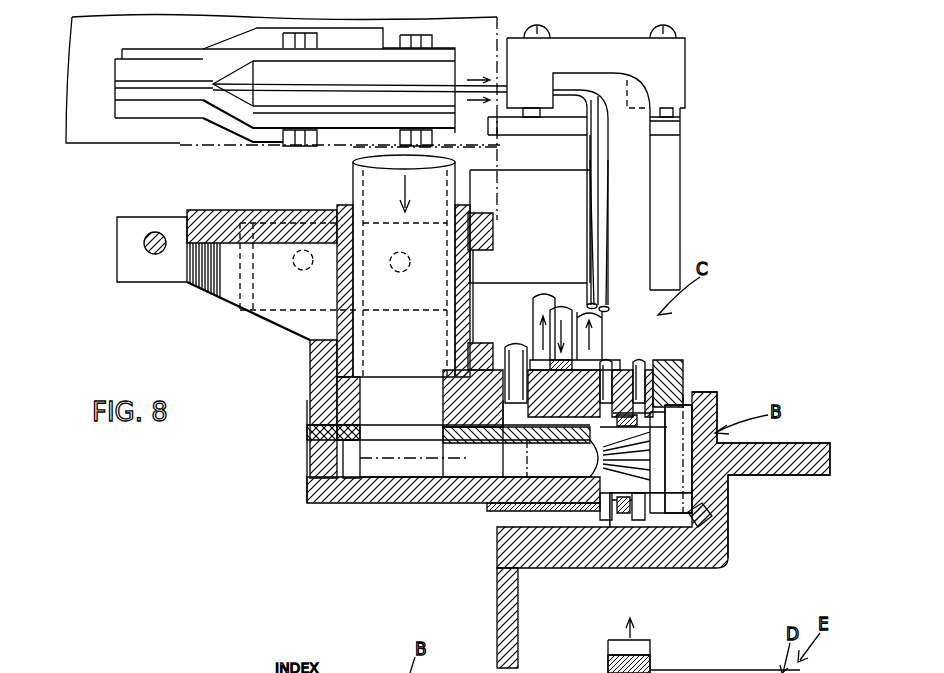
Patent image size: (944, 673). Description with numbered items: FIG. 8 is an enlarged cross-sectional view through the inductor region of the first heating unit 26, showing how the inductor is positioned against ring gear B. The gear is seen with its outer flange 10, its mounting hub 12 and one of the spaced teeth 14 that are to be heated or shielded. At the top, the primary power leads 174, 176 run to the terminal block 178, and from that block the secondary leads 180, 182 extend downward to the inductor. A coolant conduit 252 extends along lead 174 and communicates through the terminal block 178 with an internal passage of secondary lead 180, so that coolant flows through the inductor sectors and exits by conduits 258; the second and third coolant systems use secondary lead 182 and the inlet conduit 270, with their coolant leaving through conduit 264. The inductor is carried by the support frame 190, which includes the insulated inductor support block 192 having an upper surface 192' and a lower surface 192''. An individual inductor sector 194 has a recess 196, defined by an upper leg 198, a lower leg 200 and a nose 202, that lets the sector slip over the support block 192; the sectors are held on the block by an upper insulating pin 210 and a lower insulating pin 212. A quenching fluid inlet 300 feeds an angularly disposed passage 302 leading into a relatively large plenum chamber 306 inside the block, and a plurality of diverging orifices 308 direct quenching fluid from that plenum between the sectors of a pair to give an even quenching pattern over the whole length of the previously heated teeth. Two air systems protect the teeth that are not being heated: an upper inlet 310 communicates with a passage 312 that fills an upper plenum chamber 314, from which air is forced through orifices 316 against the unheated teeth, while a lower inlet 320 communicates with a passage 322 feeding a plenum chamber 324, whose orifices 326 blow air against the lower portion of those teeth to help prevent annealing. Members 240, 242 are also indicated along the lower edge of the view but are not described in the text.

The outer flange 10 is at (790, 443).
The mounting hub 12 is at (728, 518).
The spaced teeth 14 is at (700, 410).
The first heating unit 26 is at (87, 146).
The primary power lead 174 is at (185, 72).
The primary power lead 176 is at (178, 100).
The terminal block 178 is at (435, 68).
The secondary lead 180 is at (648, 190).
The secondary lead 182 is at (583, 243).
The support frame 190 is at (210, 278).
The inductor support block 192 is at (505, 536).
The upper surface 192' is at (679, 491).
The lower surface 192'' is at (476, 591).
The inductor sector 194 is at (680, 370).
The recess 196 is at (647, 400).
The leg 198 is at (620, 360).
The lower leg 200 is at (650, 527).
The nose 202 is at (690, 527).
The upper insulating pin 210 is at (604, 394).
The lower insulating pin 212 is at (640, 522).
The member 240 is at (827, 665).
The member 242 is at (745, 672).
The conduit 252 is at (128, 56).
The conduit 258 is at (535, 308).
The conduit 264 is at (597, 312).
The inlet conduit 270 is at (553, 335).
The quenching fluid inlet 300 is at (360, 340).
The angularly disposed passage 302 is at (440, 490).
The plenum chamber 306 is at (590, 503).
The orifices 308 is at (650, 468).
The upper inlet 310 is at (498, 392).
The passage 312 is at (540, 413).
The upper plenum chamber 314 is at (683, 375).
The orifices 316 is at (690, 386).
The inlet 320 is at (500, 455).
The passage 322 is at (540, 512).
The plenum chamber 324 is at (622, 520).
The orifices 326 is at (727, 545).